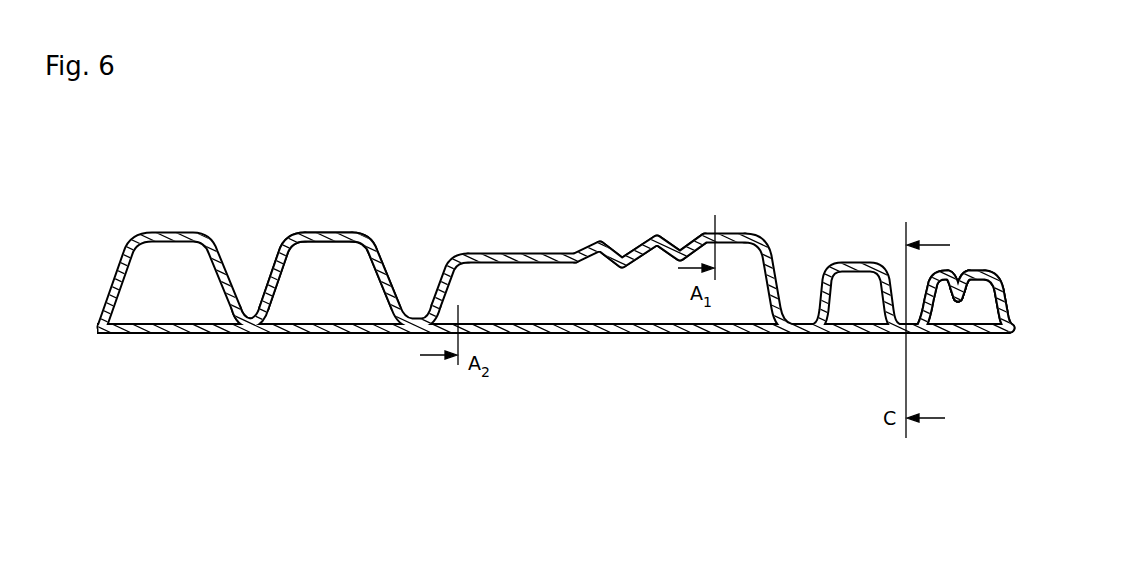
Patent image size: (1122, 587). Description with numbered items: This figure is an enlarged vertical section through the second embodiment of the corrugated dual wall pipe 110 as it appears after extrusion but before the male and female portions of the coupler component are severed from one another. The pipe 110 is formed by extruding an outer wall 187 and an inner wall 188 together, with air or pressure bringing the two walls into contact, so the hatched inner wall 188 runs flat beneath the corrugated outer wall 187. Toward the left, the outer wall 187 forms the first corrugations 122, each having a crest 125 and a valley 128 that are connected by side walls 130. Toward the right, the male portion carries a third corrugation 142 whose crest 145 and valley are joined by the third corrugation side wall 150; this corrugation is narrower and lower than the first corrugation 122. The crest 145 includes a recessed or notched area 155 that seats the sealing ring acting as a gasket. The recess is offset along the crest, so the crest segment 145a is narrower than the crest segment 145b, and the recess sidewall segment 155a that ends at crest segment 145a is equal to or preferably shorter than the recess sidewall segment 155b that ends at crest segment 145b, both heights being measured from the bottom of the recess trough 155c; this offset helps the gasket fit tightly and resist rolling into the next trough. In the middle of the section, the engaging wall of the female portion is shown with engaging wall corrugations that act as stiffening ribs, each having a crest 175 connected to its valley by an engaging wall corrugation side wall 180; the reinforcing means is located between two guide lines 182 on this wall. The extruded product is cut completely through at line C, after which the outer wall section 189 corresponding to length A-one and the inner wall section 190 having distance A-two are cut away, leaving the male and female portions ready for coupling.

The corrugated dual wall pipe 110 is at (522, 192).
The first corrugation 122 is at (378, 207).
The crest 125 is at (337, 238).
The valley 128 is at (250, 318).
The side wall 130 is at (278, 245).
The third corrugation 142 is at (994, 262).
The crest of the third corrugation 145 is at (980, 272).
The crest segment 145a is at (948, 272).
The crest segment 145b is at (992, 275).
The third corrugation side wall 150 is at (1002, 305).
The recessed area 155 is at (957, 298).
The recess sidewall segment 155a is at (956, 300).
The recess sidewall segment 155b is at (960, 300).
The recess trough 155c is at (958, 300).
The crest 175 is at (600, 235).
The engaging wall corrugation side wall 180 is at (618, 255).
The guide line 182 is at (476, 250).
The outer wall 187 is at (178, 212).
The inner wall 188 is at (181, 362).
The outer wall section 189 is at (850, 263).
The inner wall section 190 is at (612, 343).